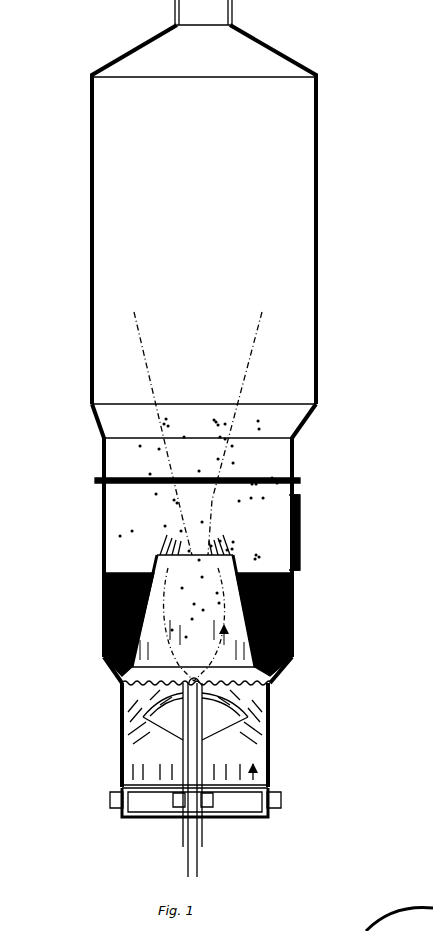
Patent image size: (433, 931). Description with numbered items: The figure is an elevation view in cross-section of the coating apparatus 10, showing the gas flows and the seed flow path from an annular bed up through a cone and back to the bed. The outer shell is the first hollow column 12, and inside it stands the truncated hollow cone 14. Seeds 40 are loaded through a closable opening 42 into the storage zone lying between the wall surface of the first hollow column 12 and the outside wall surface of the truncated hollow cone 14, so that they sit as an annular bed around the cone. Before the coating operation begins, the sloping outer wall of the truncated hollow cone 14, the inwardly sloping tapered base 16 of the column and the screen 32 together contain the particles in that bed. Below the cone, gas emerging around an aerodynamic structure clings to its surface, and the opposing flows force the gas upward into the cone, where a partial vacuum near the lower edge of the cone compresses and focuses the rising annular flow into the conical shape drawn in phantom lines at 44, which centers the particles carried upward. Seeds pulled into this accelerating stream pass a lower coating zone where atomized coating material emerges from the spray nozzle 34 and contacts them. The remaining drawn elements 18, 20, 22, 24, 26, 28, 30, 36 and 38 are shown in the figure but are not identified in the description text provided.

The coating apparatus 10 is at (345, 90).
The first hollow column 12 is at (330, 151).
The truncated hollow cone 14 is at (289, 598).
The inwardly sloping tapered base 16 is at (286, 663).
The combustion chamber 18 is at (268, 739).
The air distribution box 20 is at (236, 810).
The air inlet 22 is at (108, 799).
The air inlet 24 is at (284, 800).
The distributor plate 26 is at (270, 787).
The flame 28 is at (255, 748).
The deflector 30 is at (222, 725).
The screen 32 is at (272, 684).
The spray nozzle 34 is at (196, 679).
The fuel pipe 36 is at (189, 866).
The outer pipe 38 is at (199, 863).
The seeds 40 is at (100, 600).
The closable opening 42 is at (300, 512).
The conical upward gas flow 44 is at (223, 628).